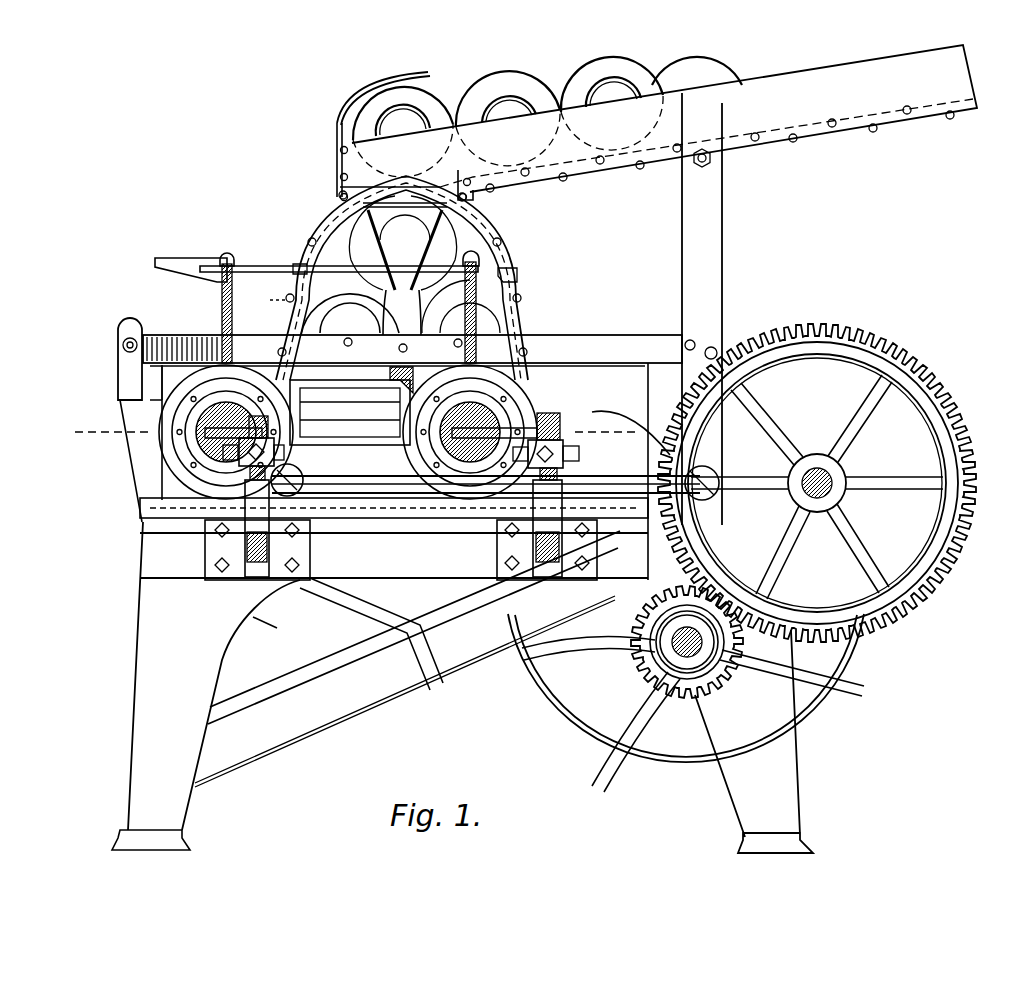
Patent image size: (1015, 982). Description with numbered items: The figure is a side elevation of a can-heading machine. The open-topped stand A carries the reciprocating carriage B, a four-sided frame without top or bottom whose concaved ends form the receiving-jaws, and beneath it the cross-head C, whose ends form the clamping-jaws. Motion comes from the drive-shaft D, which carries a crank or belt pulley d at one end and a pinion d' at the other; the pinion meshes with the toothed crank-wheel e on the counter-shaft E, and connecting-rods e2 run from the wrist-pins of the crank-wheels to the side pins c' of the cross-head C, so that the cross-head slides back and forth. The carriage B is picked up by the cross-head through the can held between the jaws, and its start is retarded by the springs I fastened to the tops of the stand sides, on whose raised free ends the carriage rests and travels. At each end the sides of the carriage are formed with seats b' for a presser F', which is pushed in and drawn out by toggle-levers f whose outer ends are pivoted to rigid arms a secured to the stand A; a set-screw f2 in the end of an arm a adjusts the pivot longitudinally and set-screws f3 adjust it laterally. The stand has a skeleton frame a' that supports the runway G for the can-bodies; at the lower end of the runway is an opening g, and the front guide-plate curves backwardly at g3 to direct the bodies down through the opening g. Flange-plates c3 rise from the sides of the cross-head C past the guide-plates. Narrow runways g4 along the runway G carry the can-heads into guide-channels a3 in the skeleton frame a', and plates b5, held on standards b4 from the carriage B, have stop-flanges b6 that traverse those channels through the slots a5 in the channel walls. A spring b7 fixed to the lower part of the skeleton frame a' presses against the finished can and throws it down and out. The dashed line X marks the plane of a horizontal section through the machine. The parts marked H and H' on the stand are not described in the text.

The runway G is at (782, 84).
The narrow runways g4 is at (706, 136).
The curved guide portion of guide-plate g3 is at (372, 86).
The opening g is at (462, 182).
The skeleton frame a' is at (409, 336).
The plates b5 is at (268, 265).
The standards b4 is at (482, 306).
The stop-flanges b6 is at (230, 262).
The grooves or slots a5 is at (297, 264).
The guide-channels a3 is at (402, 278).
The flange-plates c3 is at (267, 298).
The carriage B is at (351, 406).
The bearing F' is at (396, 432).
The seats b' is at (334, 385).
The set-screw f2 is at (540, 470).
The toggle-levers f is at (150, 465).
The rigid arms a is at (383, 502).
The set-screws f3 is at (640, 478).
The side pins c' is at (281, 511).
The cross-head C is at (325, 493).
The springs I is at (300, 495).
The connecting-rods e2 is at (412, 492).
The stand A is at (462, 675).
The brace H is at (348, 634).
The diagonal brace H' is at (407, 659).
The counter-shaft E is at (832, 480).
The toothed crank-wheel e is at (930, 555).
The drive-shaft D is at (645, 665).
The pinion d' is at (696, 708).
The crank or belt pulley d is at (681, 703).
The spring b7 is at (108, 445).
The section line X X is at (344, 434).